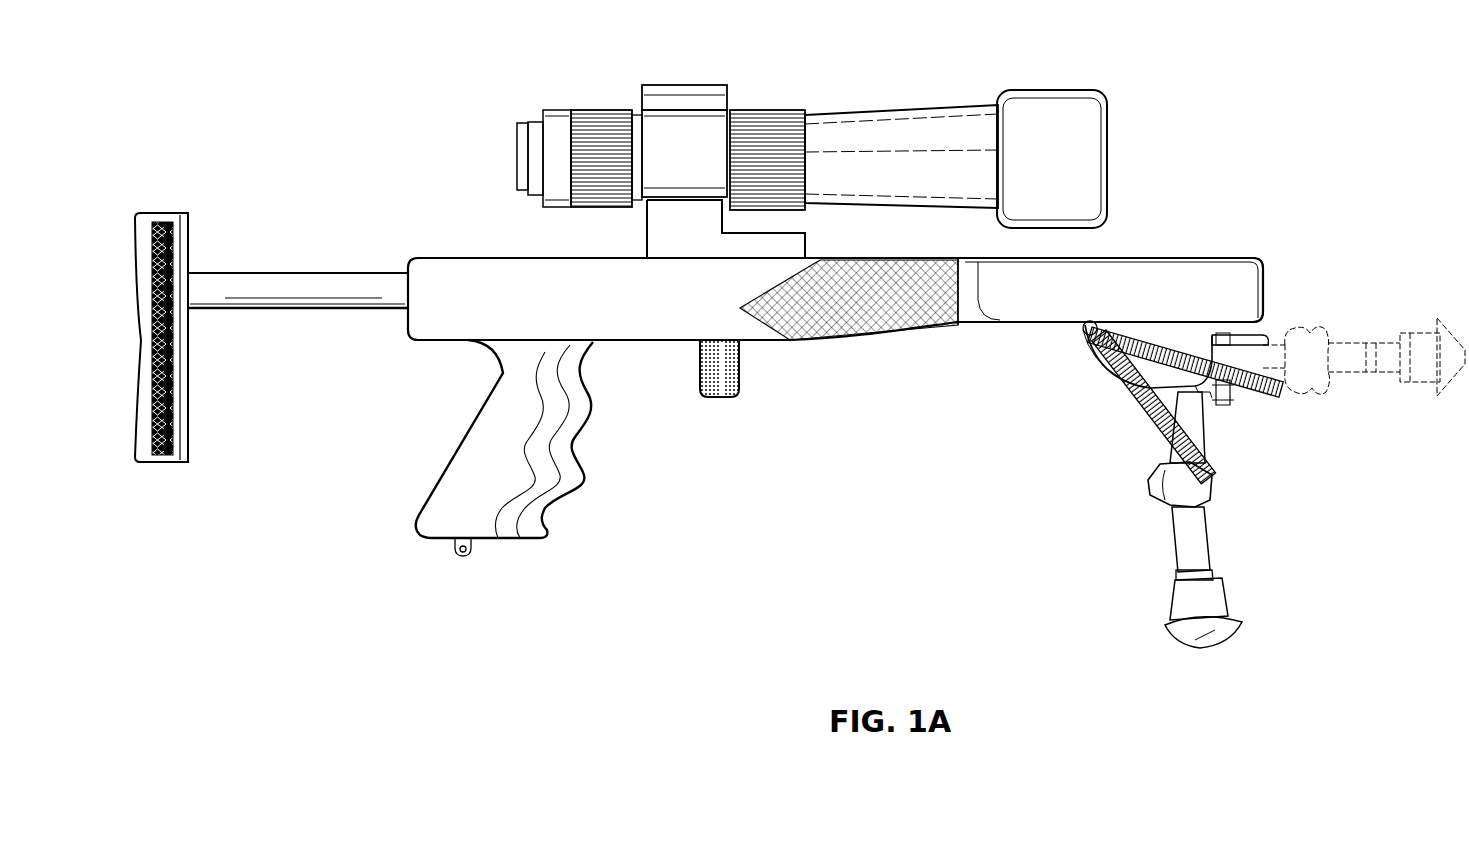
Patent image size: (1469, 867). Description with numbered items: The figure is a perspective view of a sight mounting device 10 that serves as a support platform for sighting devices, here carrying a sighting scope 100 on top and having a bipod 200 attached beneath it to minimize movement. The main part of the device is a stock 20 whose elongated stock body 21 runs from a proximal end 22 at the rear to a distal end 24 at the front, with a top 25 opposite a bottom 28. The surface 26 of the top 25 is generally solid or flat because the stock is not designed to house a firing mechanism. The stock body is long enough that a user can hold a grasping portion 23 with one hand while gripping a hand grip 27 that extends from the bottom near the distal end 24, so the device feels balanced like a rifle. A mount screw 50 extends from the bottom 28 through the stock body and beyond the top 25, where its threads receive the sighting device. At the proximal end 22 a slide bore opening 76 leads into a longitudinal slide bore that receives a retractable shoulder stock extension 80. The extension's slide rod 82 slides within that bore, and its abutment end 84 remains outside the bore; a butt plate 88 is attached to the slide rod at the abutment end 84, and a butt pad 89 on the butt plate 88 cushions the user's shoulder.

The sight mounting device 10 is at (396, 203).
The stock 20 is at (497, 258).
The stock body 21 is at (918, 341).
The proximal end 22 is at (405, 258).
The grasping portion 23 is at (1032, 300).
The distal end 24 is at (1262, 262).
The top 25 is at (1145, 258).
The surface 26 is at (600, 258).
The hand grip 27 is at (452, 484).
The bottom 28 is at (658, 340).
The mount screw 50 is at (723, 410).
The slide bore opening 76 is at (398, 312).
The retractable shoulder stock extension 80 is at (237, 258).
The slide rod 82 is at (308, 291).
The abutment end 84 is at (203, 302).
The butt plate 88 is at (182, 462).
The butt pad 89 is at (140, 462).
The sighting scope 100 is at (650, 76).
The bipod 200 is at (1232, 457).